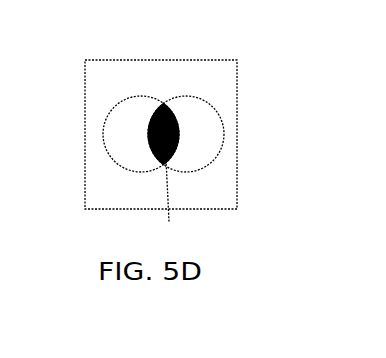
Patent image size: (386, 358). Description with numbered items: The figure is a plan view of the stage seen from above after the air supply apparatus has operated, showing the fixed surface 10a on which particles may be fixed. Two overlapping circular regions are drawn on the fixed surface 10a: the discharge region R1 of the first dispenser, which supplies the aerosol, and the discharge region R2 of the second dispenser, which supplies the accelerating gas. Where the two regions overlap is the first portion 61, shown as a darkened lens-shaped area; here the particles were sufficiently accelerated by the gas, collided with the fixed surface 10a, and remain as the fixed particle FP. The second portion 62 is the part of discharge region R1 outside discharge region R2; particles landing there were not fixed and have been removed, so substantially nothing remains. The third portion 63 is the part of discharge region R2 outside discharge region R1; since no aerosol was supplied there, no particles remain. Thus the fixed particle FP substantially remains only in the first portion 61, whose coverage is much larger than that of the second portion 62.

The fixed surface 10a is at (203, 60).
The first portion 61 is at (164, 105).
The second portion 62 is at (112, 115).
The third portion 63 is at (190, 115).
The fixed particle FP is at (168, 203).
The discharge region of the first dispenser R1 is at (113, 163).
The discharge region of the second dispenser R2 is at (214, 166).